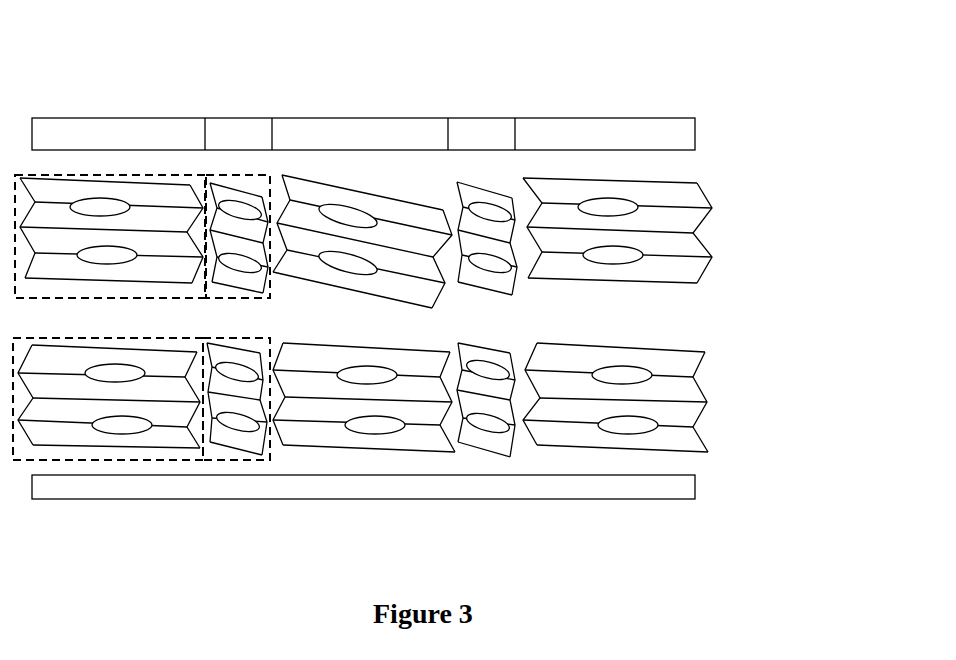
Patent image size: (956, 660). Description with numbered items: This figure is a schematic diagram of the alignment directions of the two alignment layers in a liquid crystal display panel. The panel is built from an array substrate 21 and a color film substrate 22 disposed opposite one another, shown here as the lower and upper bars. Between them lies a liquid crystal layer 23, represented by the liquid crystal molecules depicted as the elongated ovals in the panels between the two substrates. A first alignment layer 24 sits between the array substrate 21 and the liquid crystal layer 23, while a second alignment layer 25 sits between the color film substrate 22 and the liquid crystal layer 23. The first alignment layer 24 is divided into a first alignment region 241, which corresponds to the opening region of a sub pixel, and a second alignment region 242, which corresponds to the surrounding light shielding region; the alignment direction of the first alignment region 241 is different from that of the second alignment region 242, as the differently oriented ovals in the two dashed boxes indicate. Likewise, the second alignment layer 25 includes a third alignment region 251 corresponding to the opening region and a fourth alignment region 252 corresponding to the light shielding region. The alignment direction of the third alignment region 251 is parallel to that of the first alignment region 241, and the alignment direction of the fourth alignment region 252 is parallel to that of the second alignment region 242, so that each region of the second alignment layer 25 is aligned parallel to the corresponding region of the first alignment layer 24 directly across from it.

The array substrate 21 is at (697, 490).
The color film substrate 22 is at (697, 132).
The liquid crystal layer 23 is at (633, 371).
The first alignment layer 24 is at (431, 455).
The second alignment layer 25 is at (427, 181).
The first alignment region 241 is at (112, 460).
The second alignment region 242 is at (234, 460).
The third alignment region 251 is at (103, 175).
The fourth alignment region 252 is at (243, 175).